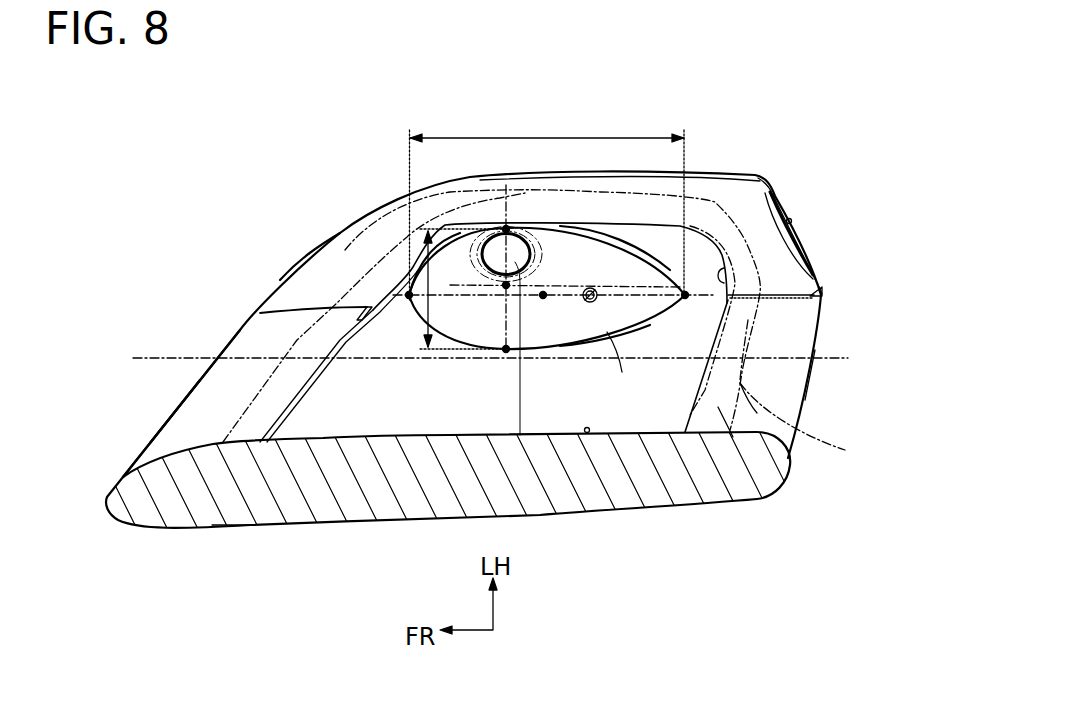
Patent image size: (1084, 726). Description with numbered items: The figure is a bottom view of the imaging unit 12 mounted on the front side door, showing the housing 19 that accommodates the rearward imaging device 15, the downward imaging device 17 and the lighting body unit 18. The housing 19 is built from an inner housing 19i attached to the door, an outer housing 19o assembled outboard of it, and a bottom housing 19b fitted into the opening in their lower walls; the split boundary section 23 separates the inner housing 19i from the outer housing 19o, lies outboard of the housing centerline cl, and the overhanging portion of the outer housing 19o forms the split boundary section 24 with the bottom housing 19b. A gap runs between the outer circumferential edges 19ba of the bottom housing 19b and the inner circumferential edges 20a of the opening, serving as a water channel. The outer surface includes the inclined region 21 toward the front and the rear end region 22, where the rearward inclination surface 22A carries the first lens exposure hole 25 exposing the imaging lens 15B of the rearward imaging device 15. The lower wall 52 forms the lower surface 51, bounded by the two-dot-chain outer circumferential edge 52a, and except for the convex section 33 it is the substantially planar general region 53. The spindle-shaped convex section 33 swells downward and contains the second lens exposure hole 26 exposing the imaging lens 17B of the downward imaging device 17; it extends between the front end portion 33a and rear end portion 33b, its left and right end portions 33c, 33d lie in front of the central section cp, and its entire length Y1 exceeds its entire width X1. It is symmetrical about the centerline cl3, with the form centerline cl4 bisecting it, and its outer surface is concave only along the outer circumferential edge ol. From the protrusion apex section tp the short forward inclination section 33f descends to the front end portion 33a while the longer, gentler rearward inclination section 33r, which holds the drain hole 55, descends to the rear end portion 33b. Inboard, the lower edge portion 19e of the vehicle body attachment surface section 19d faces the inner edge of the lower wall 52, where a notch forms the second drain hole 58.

The imaging unit 12 is at (767, 168).
The rearward imaging device 15 is at (802, 236).
The imaging lens 15B is at (808, 241).
The downward imaging device 17 is at (487, 222).
The imaging lens 17B is at (512, 238).
The lighting body unit 18 is at (603, 160).
The housing 19 is at (181, 403).
The bottom housing 19b is at (380, 416).
The outer circumferential edges 19ba is at (724, 330).
The vehicle body attachment surface section 19d is at (227, 507).
The lower edge portion 19e is at (325, 438).
The inner housing 19i is at (188, 388).
The outer housing 19o is at (343, 247).
The inner circumferential edges 20a is at (815, 292).
The inclined region 21 is at (303, 262).
The rear end region 22 is at (818, 330).
The rearward inclination surface 22A is at (778, 196).
The split boundary section 23 is at (285, 310).
The split boundary section 24 is at (637, 222).
The first lens exposure hole 25 is at (792, 219).
The second lens exposure hole 26 is at (520, 437).
The convex section 33 is at (552, 313).
The front end portion 33a is at (407, 296).
The rear end portion 33b is at (685, 298).
The left end portion 33c is at (493, 225).
The right end portion 33d is at (500, 355).
The forward inclination section 33f is at (430, 248).
The rearward inclination section 33r is at (577, 232).
The lower surface 51 is at (748, 398).
The lower wall 52 is at (718, 407).
The outer circumferential edge 52a is at (816, 425).
The general region 53 is at (682, 407).
The drain hole 55 is at (607, 332).
The second drain hole 58 is at (587, 432).
The entire width dimension X1 is at (408, 262).
The entire length dimension Y1 is at (630, 137).
The central section cp is at (543, 292).
The protrusion apex section tp is at (505, 288).
The centerline cl is at (425, 360).
The centerline cl3 is at (647, 352).
The form centerline cl4 is at (632, 275).
The outer circumferential edge ol is at (655, 372).